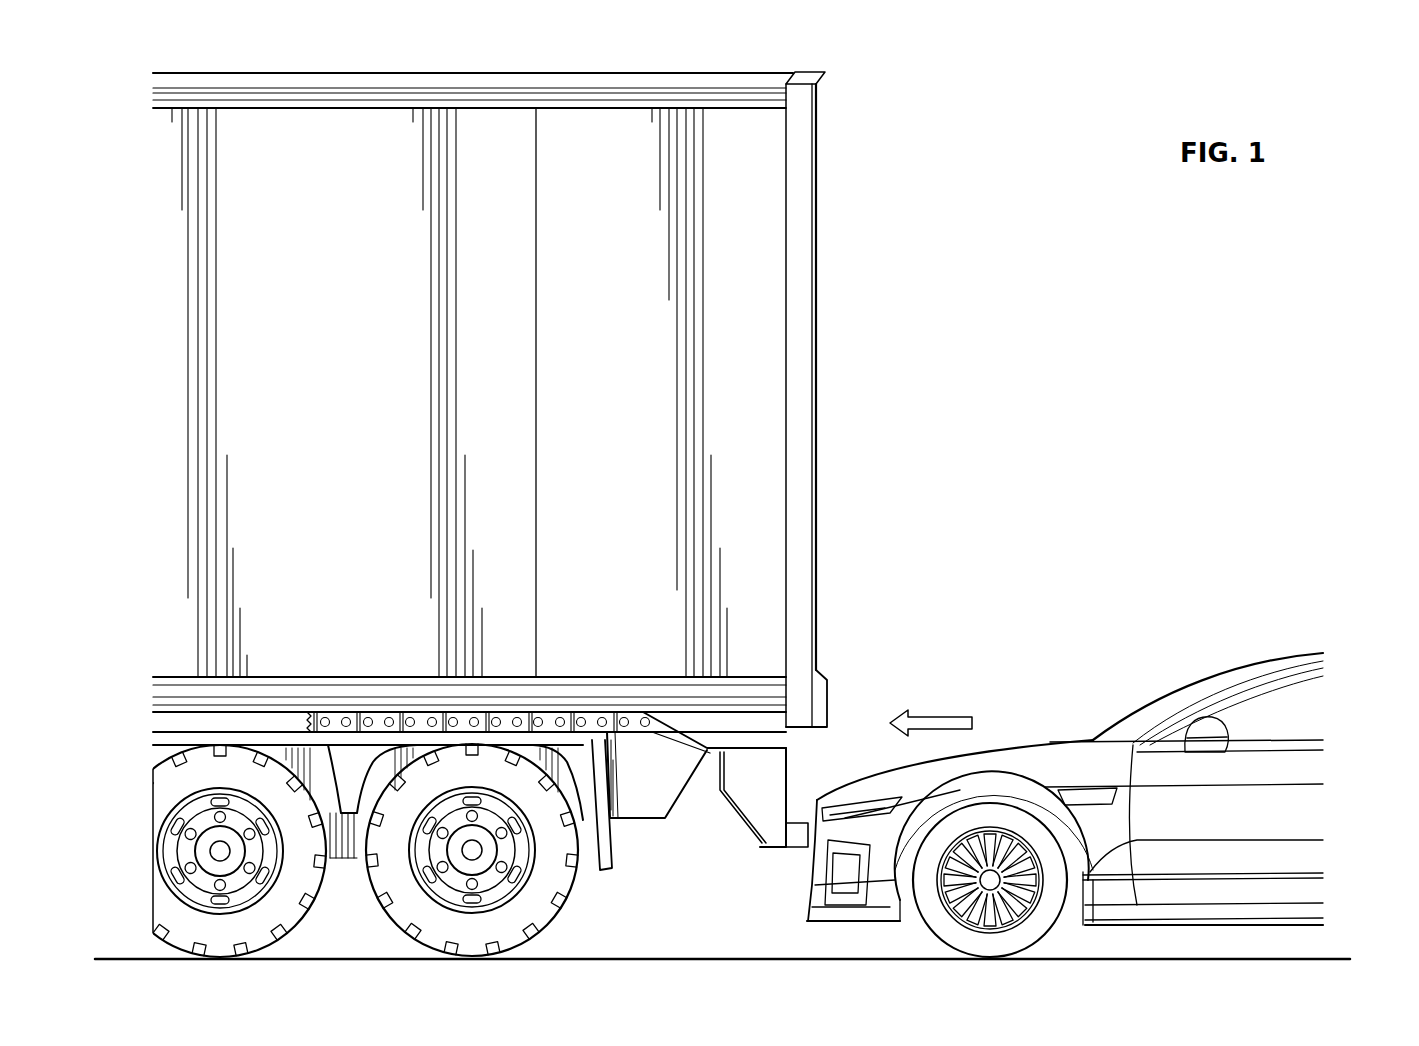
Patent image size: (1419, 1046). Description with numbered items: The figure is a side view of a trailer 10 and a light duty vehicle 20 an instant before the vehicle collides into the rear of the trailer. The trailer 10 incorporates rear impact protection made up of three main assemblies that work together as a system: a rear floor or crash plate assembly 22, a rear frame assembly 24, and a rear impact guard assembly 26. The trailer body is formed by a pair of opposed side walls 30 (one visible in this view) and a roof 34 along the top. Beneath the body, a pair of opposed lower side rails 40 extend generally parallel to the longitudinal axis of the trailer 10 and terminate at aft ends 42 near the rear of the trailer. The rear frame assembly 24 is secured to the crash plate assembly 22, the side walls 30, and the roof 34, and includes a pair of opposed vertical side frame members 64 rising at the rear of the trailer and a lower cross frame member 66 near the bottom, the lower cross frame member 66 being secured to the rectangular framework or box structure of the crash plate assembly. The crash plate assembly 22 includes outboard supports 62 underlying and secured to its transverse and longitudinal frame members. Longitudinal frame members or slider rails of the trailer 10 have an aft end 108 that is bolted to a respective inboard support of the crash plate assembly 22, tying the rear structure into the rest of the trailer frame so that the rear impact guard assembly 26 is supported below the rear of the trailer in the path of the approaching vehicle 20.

The trailer 10 is at (860, 105).
The passenger vehicle 20 is at (1197, 688).
The rear floor or crash plate assembly 22 is at (797, 745).
The rear frame assembly 24 is at (822, 243).
The rear impact guard assembly 26 is at (738, 825).
The side walls 30 is at (382, 382).
The roof 34 is at (164, 72).
The lower side rails 40 is at (345, 682).
The aft ends 42 is at (784, 676).
The outboard supports 62 is at (688, 718).
The vertical side frame members 64 is at (810, 443).
The lower cross frame member 66 is at (829, 692).
The aft end 108 is at (631, 733).